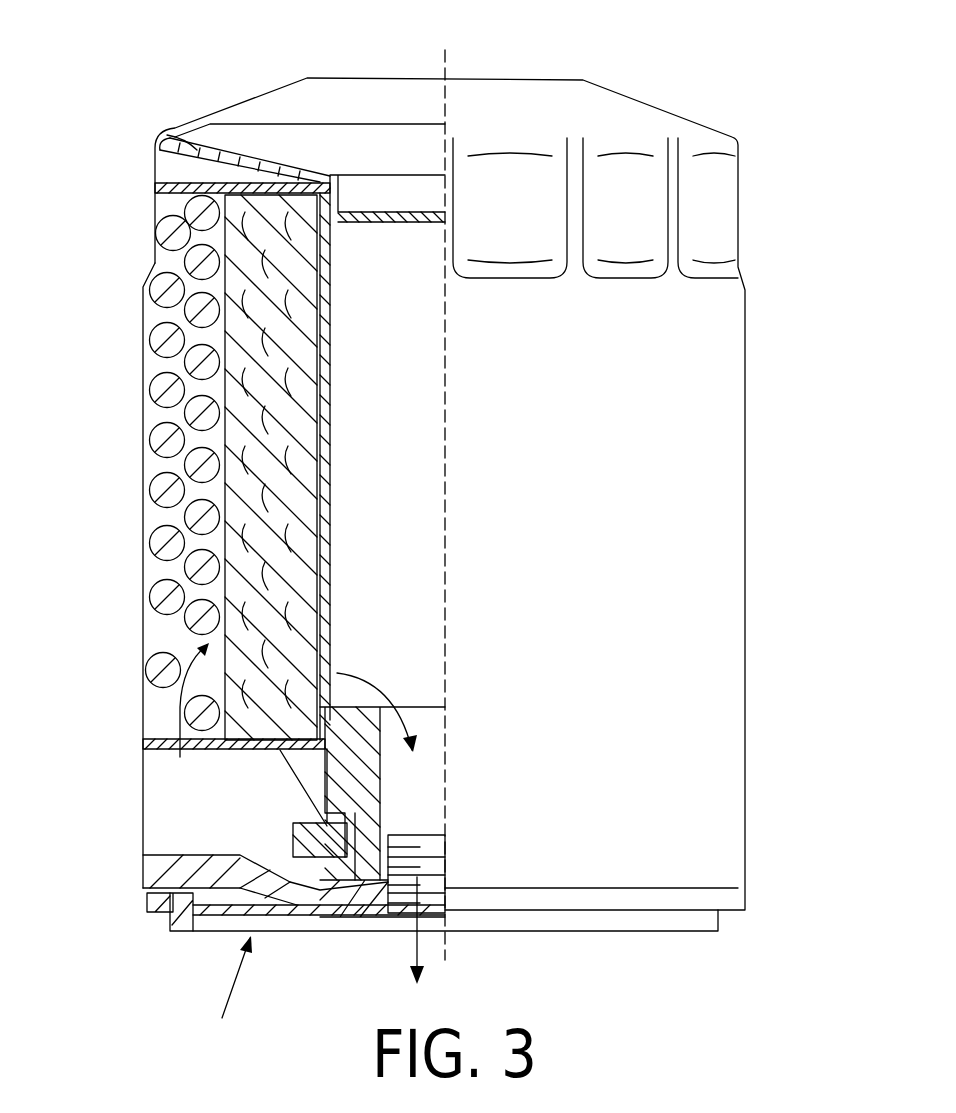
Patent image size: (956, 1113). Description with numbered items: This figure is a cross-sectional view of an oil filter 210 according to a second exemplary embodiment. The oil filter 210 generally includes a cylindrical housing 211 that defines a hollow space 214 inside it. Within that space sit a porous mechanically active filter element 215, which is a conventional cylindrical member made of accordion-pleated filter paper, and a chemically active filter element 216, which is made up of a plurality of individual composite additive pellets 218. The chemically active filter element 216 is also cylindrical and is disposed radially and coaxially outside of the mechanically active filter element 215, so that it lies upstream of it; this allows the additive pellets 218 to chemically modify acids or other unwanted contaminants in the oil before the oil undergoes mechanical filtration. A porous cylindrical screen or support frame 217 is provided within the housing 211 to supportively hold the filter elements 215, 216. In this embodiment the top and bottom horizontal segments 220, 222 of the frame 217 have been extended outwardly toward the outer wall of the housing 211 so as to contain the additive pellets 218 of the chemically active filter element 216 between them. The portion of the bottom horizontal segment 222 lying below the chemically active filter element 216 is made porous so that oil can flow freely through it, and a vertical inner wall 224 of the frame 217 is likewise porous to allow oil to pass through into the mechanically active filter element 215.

The oil filter 210 is at (808, 86).
The cylindrical housing 211 is at (548, 501).
The hollow space 214 is at (143, 792).
The mechanically active filter element 215 is at (165, 262).
The chemically active filter element 216 is at (160, 525).
The support frame 217 is at (180, 158).
The composite additive pellets 218 is at (163, 583).
The top horizontal segment 220 is at (160, 176).
The bottom horizontal segment 222 is at (333, 880).
The vertical inner wall 224 is at (330, 422).